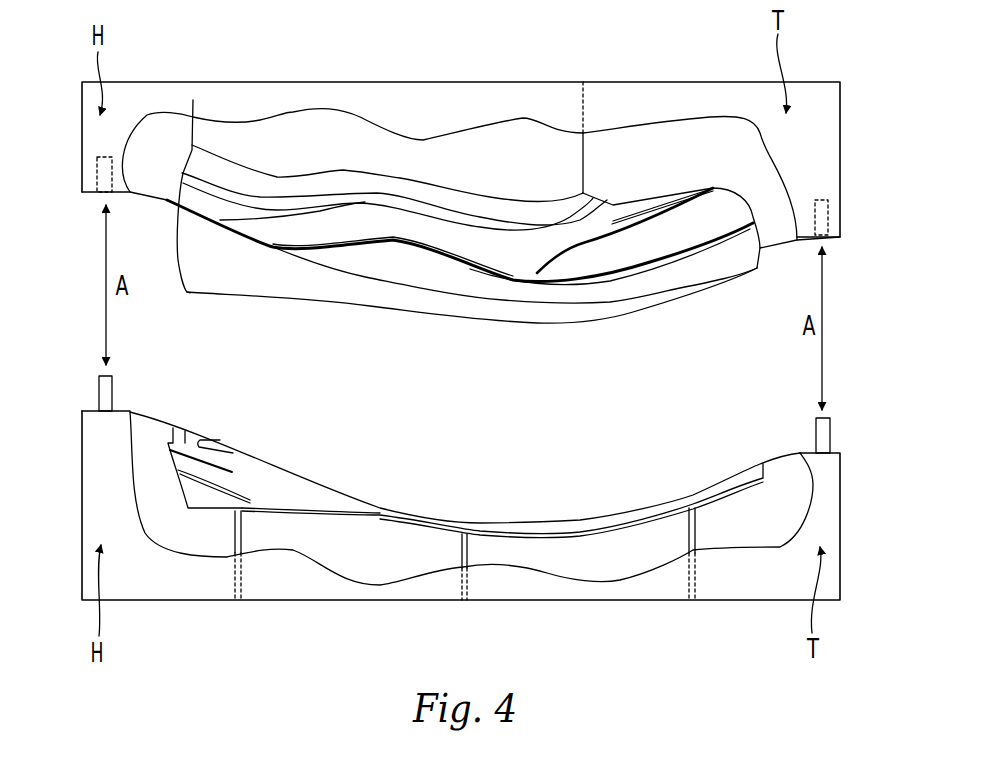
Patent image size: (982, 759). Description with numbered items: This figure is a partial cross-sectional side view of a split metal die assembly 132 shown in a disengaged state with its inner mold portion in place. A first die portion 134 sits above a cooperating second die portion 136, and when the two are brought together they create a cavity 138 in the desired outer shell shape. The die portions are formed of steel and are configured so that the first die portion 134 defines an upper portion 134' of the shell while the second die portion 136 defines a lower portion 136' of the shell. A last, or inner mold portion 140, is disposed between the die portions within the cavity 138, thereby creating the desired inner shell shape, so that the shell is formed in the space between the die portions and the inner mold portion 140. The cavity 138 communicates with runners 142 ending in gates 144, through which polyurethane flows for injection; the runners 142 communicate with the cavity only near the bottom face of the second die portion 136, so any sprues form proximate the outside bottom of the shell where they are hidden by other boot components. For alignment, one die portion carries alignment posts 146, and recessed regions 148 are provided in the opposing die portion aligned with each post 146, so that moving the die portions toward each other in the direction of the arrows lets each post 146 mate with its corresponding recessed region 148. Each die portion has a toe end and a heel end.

The split metal die assembly 132 is at (62, 165).
The first die portion 134 is at (471, 149).
The upper portion of shell 134' is at (460, 290).
The second die portion 136 is at (461, 545).
The lower portion of shell 136' is at (502, 472).
The cavity 138 is at (360, 230).
The inner mold portion 140 is at (193, 132).
The runners 142 is at (233, 537).
The gates 144 is at (689, 503).
The alignment posts 146 is at (113, 392).
The recessed regions 148 is at (822, 200).